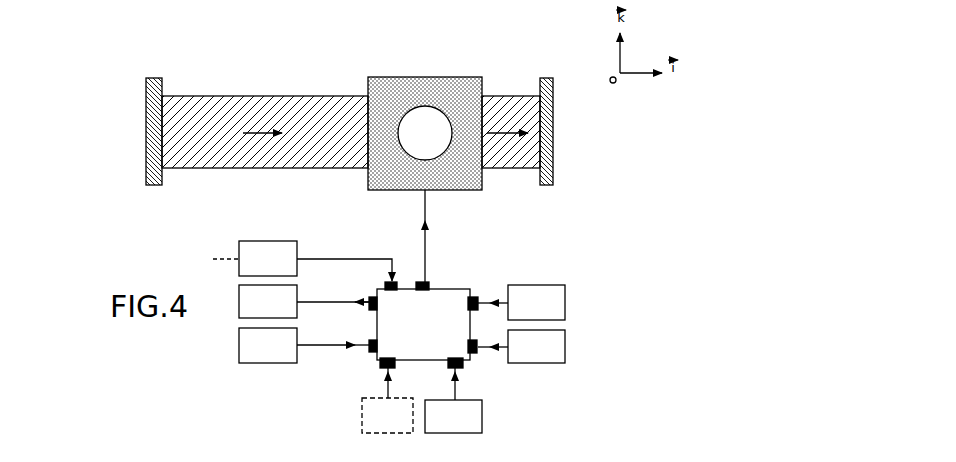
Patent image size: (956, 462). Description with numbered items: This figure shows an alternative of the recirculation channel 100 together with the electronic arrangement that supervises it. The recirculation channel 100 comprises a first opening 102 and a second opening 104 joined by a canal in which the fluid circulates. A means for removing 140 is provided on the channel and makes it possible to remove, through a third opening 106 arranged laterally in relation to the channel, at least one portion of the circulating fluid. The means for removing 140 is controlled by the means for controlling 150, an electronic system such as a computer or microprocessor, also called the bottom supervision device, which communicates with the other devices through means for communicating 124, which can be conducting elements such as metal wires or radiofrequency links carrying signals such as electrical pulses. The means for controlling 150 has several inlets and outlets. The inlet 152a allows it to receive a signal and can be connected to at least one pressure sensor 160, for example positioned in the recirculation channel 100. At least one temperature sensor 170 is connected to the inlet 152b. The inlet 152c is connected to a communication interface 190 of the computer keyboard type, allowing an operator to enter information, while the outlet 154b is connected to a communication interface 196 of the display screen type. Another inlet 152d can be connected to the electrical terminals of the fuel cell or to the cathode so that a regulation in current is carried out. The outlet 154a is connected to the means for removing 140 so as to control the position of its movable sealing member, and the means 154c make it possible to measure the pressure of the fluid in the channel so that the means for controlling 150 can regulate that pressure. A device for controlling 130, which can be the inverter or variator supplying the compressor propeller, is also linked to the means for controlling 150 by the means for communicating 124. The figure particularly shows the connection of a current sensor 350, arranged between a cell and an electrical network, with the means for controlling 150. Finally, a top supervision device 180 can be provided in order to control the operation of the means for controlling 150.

The recirculation channel 100 is at (283, 44).
The first opening 102 is at (143, 133).
The second opening 104 is at (556, 133).
The third opening 106 is at (423, 105).
The means for removing 140 is at (465, 77).
The means for communicating 124 is at (432, 233).
The device for controlling 130 is at (268, 258).
The communication interface 196 is at (268, 301).
The communication interface 190 is at (268, 345).
The means for controlling 150 is at (410, 332).
The pressure sensor 160 is at (536, 302).
The temperature sensor 170 is at (536, 346).
The top supervision device 180 is at (453, 416).
The current sensor 350 is at (387, 415).
The inlet 152a is at (472, 297).
The inlet 152b is at (477, 352).
The inlet 152c is at (370, 352).
The inlet 152d is at (463, 363).
The outlet 154a is at (428, 286).
The outlet 154b is at (372, 297).
The means for measuring pressure 154c is at (398, 281).